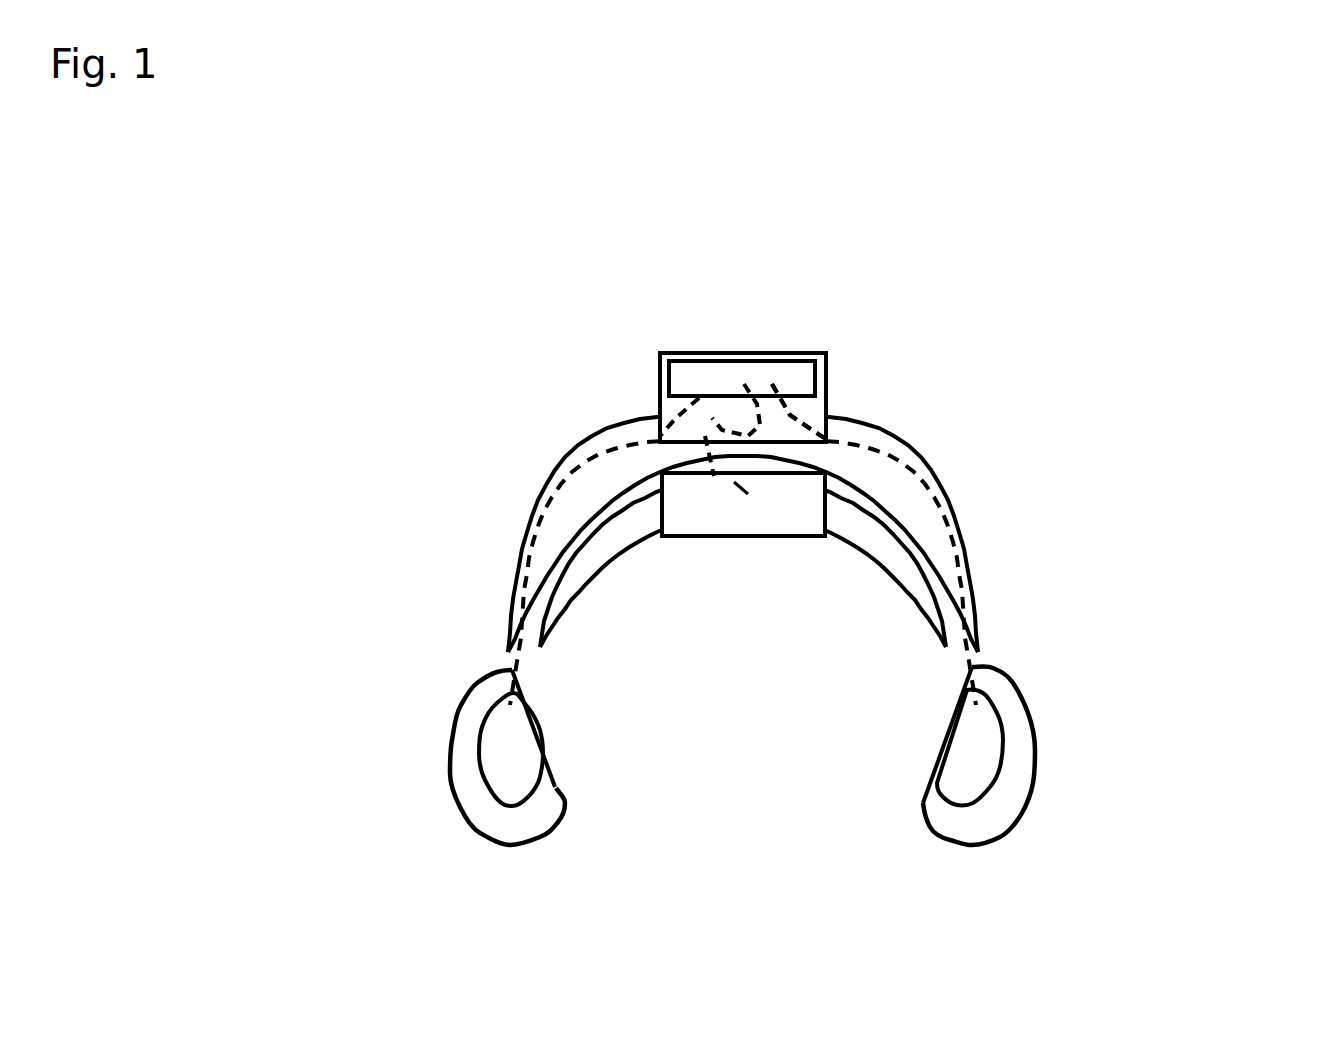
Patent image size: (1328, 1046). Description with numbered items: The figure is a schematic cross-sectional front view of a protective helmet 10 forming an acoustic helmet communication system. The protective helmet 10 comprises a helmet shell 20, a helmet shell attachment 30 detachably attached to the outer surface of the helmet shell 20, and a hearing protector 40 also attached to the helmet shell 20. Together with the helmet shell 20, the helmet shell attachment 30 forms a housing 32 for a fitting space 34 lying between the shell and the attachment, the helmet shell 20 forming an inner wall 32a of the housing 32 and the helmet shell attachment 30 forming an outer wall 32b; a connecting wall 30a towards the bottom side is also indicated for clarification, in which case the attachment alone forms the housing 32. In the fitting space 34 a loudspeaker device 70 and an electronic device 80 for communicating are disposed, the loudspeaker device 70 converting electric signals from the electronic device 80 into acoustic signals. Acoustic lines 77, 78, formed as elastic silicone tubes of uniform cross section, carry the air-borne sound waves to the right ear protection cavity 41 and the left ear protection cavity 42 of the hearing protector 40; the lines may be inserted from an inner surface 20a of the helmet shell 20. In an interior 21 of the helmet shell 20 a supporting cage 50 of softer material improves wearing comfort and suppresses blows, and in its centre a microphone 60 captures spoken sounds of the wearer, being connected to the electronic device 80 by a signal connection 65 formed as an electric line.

The protective helmet 10 is at (540, 397).
The helmet shell 20 is at (967, 555).
The inner surface 20a is at (930, 550).
The interior 21 is at (760, 613).
The helmet shell attachment 30 is at (720, 353).
The housing 32 is at (743, 397).
The connecting wall 30a is at (797, 428).
The inner wall 32a is at (799, 411).
The outer wall 32b is at (807, 353).
The fitting space 34 is at (660, 355).
The hearing protector 40 is at (468, 750).
The right ear protection cavity 41 is at (510, 750).
The left ear protection cavity 42 is at (982, 737).
The supporting cage 50 is at (860, 531).
The microphone 60 is at (780, 503).
The signal connection 65 is at (740, 484).
The loudspeaker device 70 is at (712, 387).
The acoustic line 77 is at (568, 492).
The acoustic line 78 is at (943, 507).
The electronic device 80 is at (742, 378).